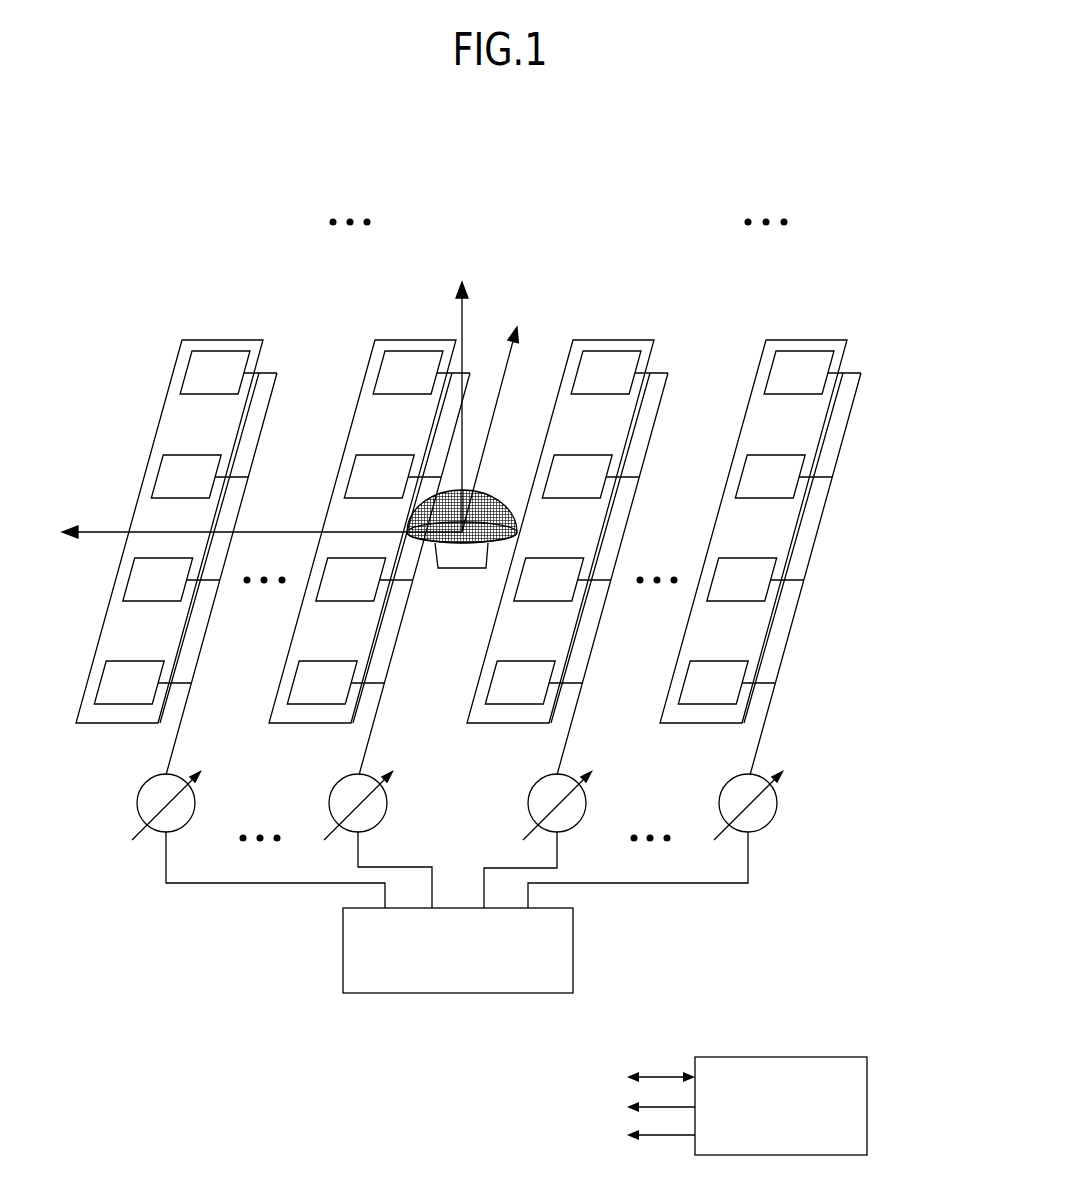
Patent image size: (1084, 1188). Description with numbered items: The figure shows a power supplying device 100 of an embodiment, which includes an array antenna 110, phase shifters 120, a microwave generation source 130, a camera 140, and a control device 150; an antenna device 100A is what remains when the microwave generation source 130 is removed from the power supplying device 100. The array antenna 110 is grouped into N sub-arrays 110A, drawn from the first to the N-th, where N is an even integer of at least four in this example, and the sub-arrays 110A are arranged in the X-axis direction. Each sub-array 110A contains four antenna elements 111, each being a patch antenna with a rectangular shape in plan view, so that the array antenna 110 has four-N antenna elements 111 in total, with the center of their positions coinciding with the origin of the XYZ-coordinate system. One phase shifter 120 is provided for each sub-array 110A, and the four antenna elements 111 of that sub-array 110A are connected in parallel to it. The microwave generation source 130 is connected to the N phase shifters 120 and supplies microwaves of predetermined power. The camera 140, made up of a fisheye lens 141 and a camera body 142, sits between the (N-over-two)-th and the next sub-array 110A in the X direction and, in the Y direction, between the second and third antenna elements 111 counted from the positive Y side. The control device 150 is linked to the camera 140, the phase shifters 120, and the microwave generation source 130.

The power supplying device 100 is at (910, 133).
The antenna device 100A is at (884, 288).
The array antenna 110 is at (203, 200).
The sub-array 110A is at (822, 340).
The antenna element 111 is at (785, 352).
The phase shifter 120 is at (729, 782).
The microwave generation source 130 is at (458, 997).
The camera 140 is at (273, 313).
The fisheye lens 141 is at (415, 510).
The camera body 142 is at (437, 552).
The control device 150 is at (815, 1057).